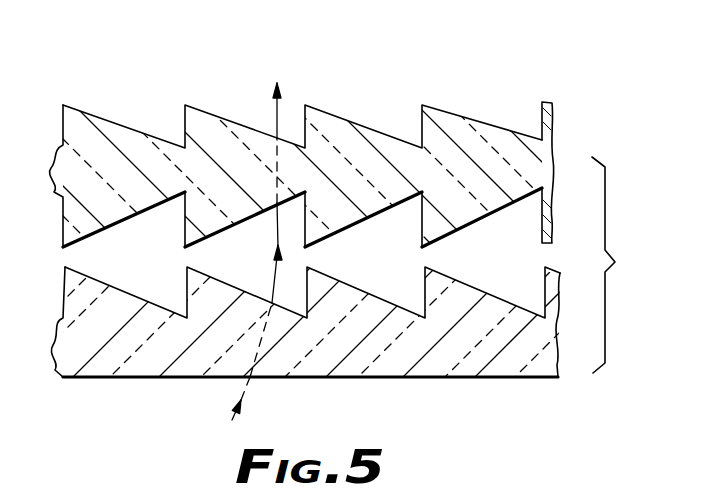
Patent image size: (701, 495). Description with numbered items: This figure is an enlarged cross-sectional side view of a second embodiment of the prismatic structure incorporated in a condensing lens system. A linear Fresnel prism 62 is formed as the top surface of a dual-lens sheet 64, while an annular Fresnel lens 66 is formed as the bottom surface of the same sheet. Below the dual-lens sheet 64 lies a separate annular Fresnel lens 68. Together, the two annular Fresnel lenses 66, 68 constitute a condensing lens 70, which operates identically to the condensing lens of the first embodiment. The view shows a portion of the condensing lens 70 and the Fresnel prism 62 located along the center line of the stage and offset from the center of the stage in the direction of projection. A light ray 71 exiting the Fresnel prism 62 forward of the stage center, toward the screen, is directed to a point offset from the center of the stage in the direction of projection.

The linear Fresnel prism 62 is at (103, 119).
The dual-lens sheet 64 is at (553, 157).
The annular Fresnel lens 66 is at (122, 222).
The annular Fresnel lens 68 is at (118, 290).
The condensing lens 70 is at (625, 265).
The light ray 71 is at (270, 117).